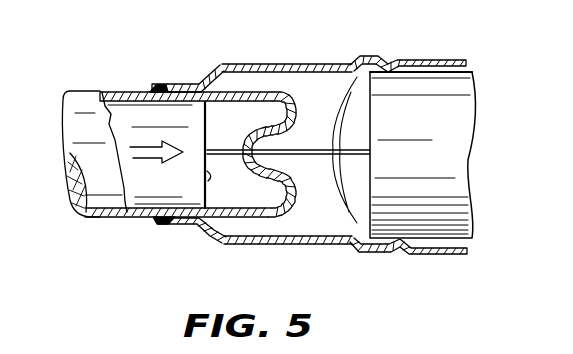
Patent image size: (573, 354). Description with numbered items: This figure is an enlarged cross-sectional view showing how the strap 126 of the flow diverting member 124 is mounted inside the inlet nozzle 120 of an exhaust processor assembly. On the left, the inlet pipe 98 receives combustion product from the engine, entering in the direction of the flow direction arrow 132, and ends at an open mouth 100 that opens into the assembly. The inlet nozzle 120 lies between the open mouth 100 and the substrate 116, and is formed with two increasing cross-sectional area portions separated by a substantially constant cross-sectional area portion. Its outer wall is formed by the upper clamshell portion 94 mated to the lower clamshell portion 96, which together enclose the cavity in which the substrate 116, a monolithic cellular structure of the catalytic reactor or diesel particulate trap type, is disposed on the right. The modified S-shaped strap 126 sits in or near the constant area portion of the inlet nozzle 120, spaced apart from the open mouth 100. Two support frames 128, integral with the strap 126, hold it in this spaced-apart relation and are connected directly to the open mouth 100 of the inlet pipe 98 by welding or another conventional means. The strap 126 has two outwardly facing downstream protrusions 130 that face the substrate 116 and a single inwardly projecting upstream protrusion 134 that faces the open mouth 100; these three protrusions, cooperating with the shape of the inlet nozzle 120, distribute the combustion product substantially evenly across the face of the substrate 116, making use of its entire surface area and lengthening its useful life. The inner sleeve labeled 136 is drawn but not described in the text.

The upper clamshell portion 94 is at (380, 58).
The lower clamshell portion 96 is at (434, 252).
The inlet pipe 98 is at (134, 92).
The open mouth 100 is at (167, 221).
The substrate 116 is at (432, 87).
The inlet nozzle 120 is at (276, 145).
The flow diverting member 124 is at (262, 91).
The strap 126 is at (293, 212).
The support frames 128 is at (235, 86).
The downstream protrusions 130 is at (294, 114).
The flow direction arrow 132 is at (158, 153).
The upstream protrusion 134 is at (211, 237).
The inner sleeve 136 is at (286, 84).